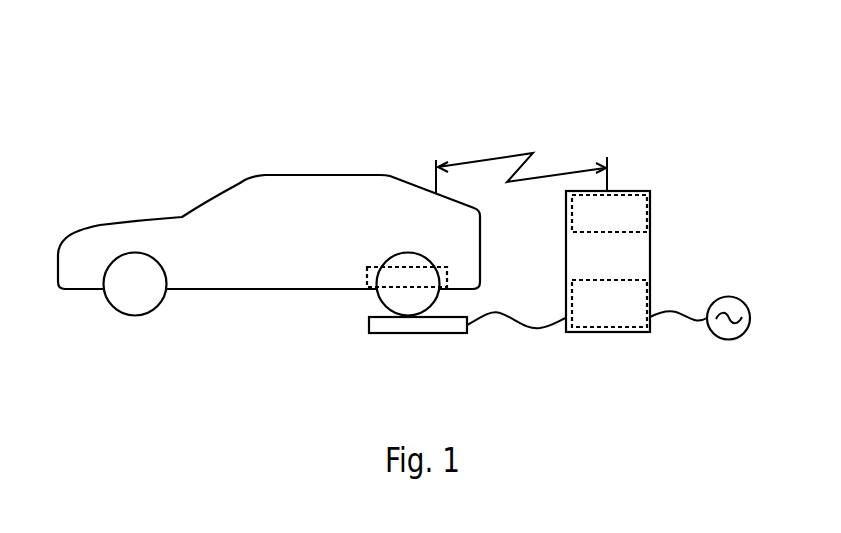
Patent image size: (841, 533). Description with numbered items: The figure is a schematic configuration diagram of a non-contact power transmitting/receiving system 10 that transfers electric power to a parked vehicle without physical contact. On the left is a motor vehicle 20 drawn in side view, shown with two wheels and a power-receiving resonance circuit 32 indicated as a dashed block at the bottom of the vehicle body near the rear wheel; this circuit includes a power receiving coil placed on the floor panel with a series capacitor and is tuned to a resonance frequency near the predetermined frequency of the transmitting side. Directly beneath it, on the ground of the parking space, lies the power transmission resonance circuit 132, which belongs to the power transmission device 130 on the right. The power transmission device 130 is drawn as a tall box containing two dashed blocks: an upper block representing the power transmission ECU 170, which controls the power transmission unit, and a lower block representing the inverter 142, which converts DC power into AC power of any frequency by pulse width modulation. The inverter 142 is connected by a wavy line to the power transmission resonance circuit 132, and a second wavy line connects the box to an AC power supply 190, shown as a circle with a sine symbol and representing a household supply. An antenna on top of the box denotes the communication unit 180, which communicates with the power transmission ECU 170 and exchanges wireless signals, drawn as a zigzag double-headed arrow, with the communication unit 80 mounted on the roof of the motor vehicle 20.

The non-contact power transmitting/receiving system 10 is at (515, 52).
The motor vehicle 20 is at (310, 190).
The power-receiving resonance circuit 32 is at (370, 278).
The communication unit 80 is at (433, 181).
The power transmission device 130 is at (635, 148).
The power transmission resonance circuit 132 is at (425, 326).
The inverter 142 is at (623, 292).
The power transmission ECU 170 is at (623, 212).
The communication unit 180 is at (609, 175).
The AC power supply 190 is at (728, 341).